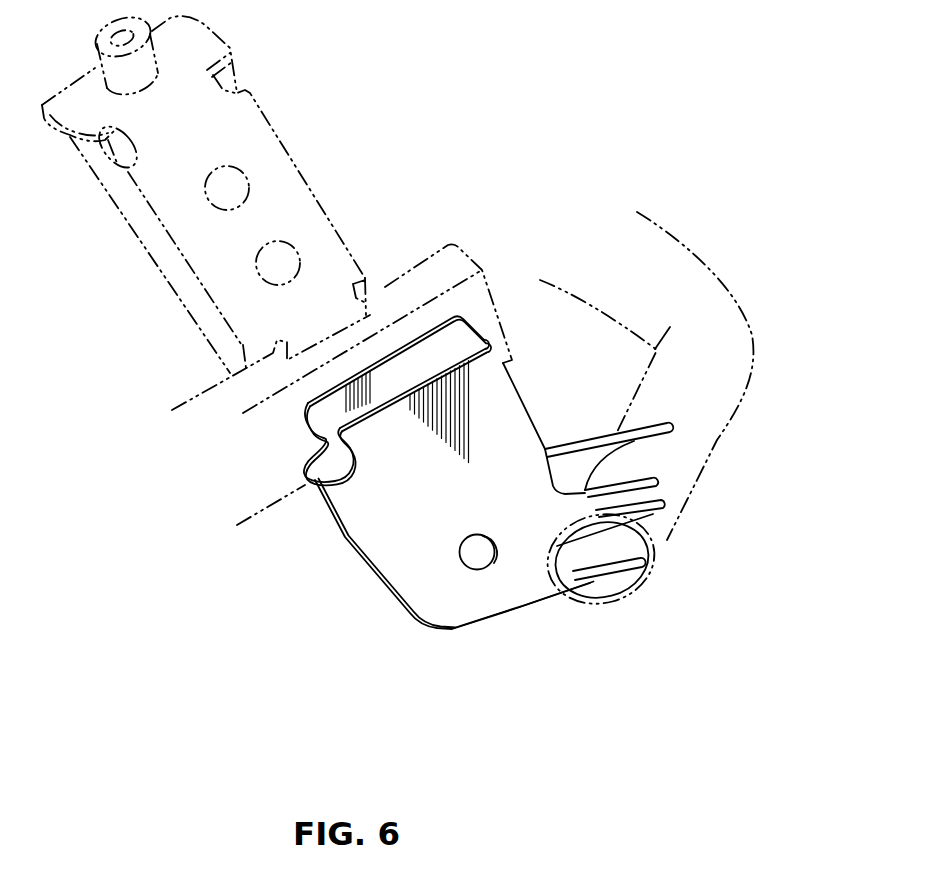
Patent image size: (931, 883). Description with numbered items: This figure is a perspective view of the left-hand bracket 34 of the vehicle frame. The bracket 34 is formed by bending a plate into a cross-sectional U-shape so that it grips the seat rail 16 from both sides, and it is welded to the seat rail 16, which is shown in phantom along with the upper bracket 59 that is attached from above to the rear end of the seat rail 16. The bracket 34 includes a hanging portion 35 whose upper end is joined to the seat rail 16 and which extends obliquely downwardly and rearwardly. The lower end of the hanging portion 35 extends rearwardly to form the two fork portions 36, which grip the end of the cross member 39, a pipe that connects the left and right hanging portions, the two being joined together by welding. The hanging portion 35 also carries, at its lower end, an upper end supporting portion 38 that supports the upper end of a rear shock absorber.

The upper bracket 59 is at (262, 105).
The seat rail 16 is at (456, 262).
The bracket 34 is at (413, 325).
The hanging portion 35 is at (410, 533).
The fork portions 36 is at (675, 432).
The upper end supporting portion 38 is at (480, 566).
The cross member 39 is at (690, 247).